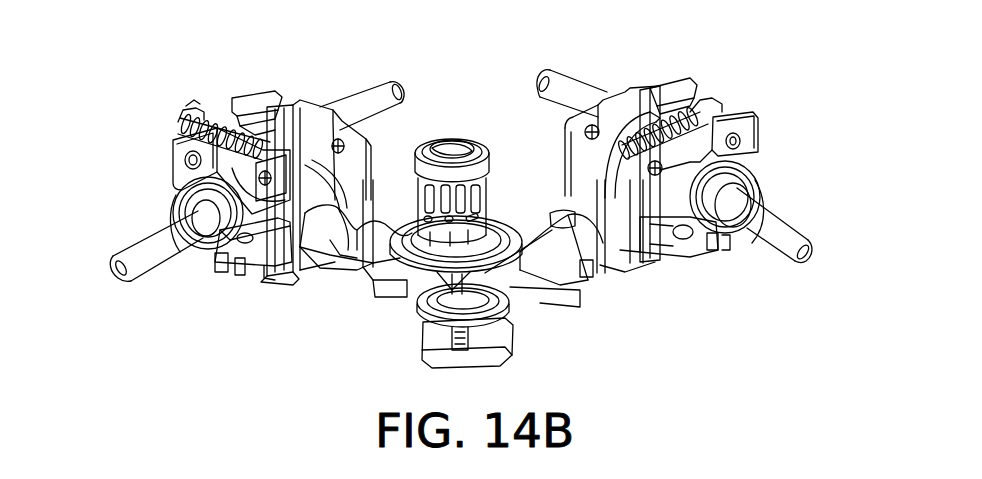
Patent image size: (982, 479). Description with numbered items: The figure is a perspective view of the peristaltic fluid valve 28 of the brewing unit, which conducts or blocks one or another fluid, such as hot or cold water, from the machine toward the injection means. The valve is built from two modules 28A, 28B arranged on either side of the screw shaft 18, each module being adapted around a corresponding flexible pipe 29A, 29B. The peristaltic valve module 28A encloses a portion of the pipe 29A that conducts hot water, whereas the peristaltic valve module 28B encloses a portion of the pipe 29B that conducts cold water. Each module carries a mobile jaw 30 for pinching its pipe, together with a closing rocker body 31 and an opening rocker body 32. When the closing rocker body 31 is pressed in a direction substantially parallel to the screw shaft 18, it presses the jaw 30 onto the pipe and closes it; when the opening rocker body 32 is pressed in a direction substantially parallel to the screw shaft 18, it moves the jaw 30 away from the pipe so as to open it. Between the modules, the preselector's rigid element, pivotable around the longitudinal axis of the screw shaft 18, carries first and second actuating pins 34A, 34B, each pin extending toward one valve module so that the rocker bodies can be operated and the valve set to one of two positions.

The screw shaft 18 is at (452, 140).
The peristaltic fluid valve 28 is at (249, 341).
The peristaltic valve module 28A is at (189, 97).
The peristaltic valve module 28B is at (767, 115).
The flexible pipe 29A is at (143, 236).
The flexible pipe 29B is at (578, 76).
The mobile jaw 30 is at (182, 128).
The closing rocker body 31 is at (320, 265).
The opening rocker body 32 is at (357, 265).
The first actuating pin 34A is at (372, 210).
The second actuating pin 34B is at (569, 276).